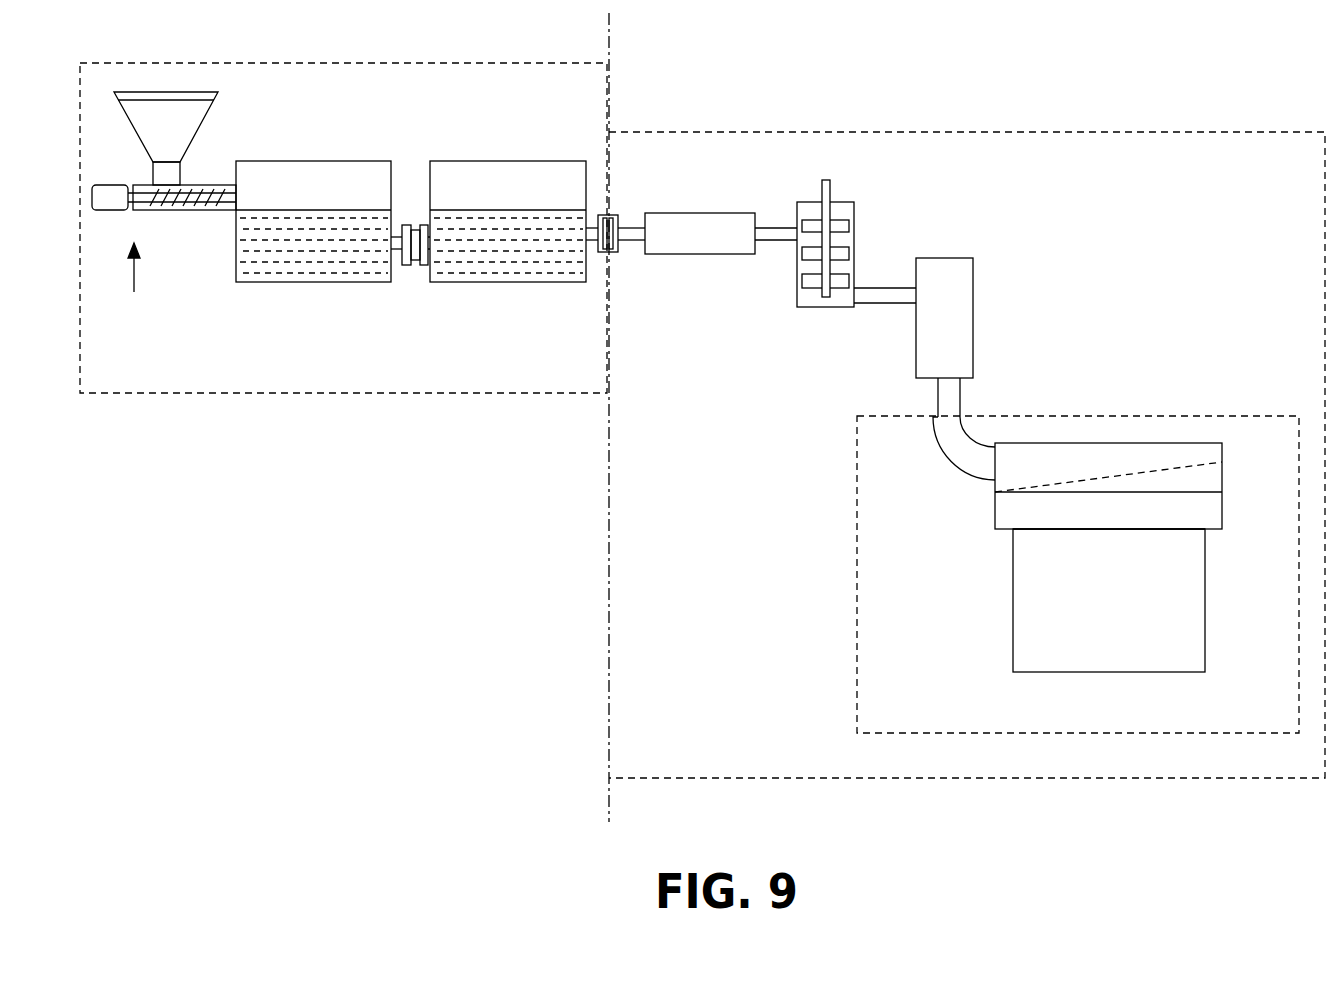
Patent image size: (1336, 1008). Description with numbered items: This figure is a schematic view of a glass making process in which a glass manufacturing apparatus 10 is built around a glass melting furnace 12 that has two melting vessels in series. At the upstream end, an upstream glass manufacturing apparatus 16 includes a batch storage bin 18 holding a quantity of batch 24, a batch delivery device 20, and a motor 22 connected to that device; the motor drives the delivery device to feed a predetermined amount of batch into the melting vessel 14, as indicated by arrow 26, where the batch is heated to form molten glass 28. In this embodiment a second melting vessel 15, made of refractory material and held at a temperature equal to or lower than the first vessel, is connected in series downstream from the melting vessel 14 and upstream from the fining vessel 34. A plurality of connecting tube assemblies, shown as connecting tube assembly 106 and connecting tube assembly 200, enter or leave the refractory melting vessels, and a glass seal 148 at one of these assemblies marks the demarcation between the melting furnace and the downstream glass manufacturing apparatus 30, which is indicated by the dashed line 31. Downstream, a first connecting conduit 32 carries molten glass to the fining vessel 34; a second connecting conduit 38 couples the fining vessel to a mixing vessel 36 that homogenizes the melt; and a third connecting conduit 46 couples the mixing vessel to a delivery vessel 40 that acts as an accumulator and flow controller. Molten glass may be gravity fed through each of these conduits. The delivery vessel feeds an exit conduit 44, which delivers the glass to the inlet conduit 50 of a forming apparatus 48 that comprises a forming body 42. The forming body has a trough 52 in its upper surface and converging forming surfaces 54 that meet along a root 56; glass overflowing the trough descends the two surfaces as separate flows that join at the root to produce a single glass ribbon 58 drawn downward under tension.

The glass manufacturing apparatus 10 is at (303, 480).
The glass melting furnace 12 is at (235, 394).
The melting vessel 14 is at (299, 218).
The second melting vessel 15 is at (505, 161).
The upstream glass manufacturing apparatus 16 is at (132, 282).
The batch storage bin 18 is at (189, 137).
The batch delivery device 20 is at (200, 212).
The motor 22 is at (108, 185).
The batch 24 is at (177, 130).
The arrow 26 is at (313, 187).
The molten glass 28 is at (258, 272).
The downstream glass manufacturing apparatus 30 is at (857, 132).
The dashed line 31 is at (609, 803).
The first connecting conduit 32 is at (633, 255).
The fining vessel 34 is at (685, 255).
The mixing vessel 36 is at (797, 292).
The second connecting conduit 38 is at (772, 226).
The delivery vessel 40 is at (915, 350).
The forming body 42 is at (1113, 468).
The exit conduit 44 is at (962, 400).
The third connecting conduit 46 is at (878, 307).
The forming apparatus 48 is at (1102, 416).
The inlet conduit 50 is at (950, 460).
The trough 52 is at (1150, 468).
The converging forming surfaces 54 is at (1005, 507).
The root 56 is at (1172, 530).
The glass ribbon 58 is at (1013, 575).
The connecting tube assembly 106 is at (492, 199).
The connecting tube assembly 200 is at (492, 199).
The glass seal 148 is at (620, 205).